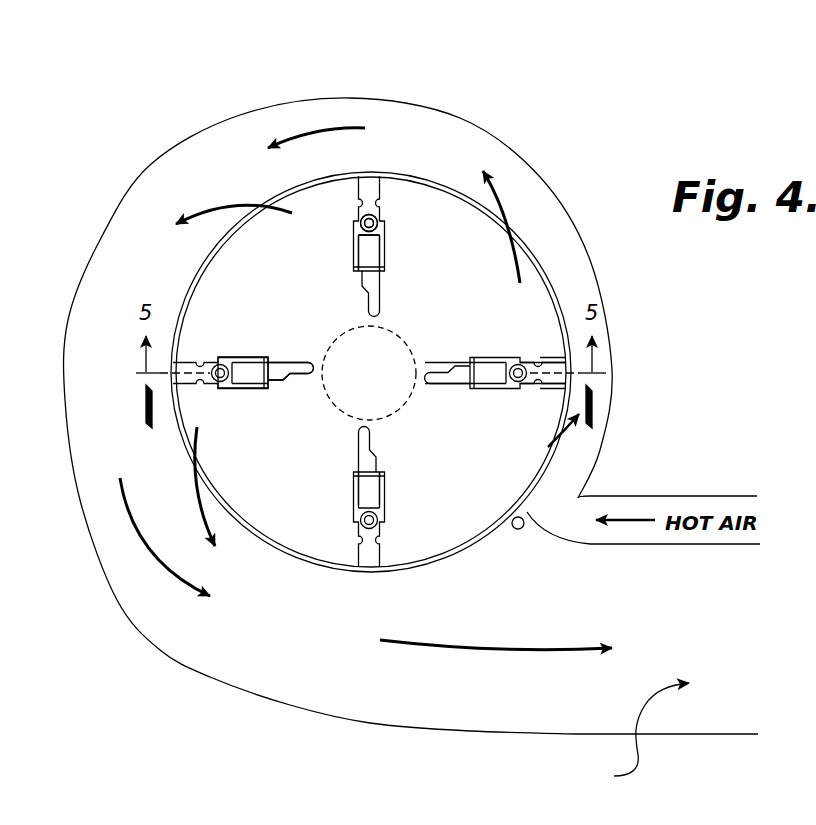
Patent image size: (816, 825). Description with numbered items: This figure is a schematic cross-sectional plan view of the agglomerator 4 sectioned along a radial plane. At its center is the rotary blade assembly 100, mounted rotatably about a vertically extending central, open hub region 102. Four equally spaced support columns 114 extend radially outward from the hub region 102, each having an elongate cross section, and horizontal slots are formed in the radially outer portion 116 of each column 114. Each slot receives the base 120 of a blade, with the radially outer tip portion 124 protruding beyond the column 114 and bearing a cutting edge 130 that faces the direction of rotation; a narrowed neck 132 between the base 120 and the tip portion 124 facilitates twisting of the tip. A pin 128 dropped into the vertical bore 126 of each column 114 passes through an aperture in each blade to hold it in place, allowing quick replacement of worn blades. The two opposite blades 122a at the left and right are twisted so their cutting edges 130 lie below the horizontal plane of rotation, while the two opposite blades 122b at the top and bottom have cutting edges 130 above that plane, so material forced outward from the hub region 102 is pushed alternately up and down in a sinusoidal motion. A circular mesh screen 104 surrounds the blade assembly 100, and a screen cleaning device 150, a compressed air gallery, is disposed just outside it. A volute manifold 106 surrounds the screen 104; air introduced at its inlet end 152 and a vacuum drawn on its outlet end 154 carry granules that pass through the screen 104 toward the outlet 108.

The agglomerator 4 is at (99, 114).
The rotary blade assembly 100 is at (414, 213).
The central open hub region 102 is at (411, 320).
The mesh screen 104 is at (187, 283).
The volute manifold 106 is at (210, 678).
The outlet 108 is at (633, 735).
The support column 114 is at (288, 381).
The radially outer portion 116 is at (234, 383).
The base 120 is at (497, 357).
The blade 122a is at (217, 361).
The blade 122b is at (356, 198).
The radially outer tip portion 124 is at (549, 361).
The vertical bore 126 is at (363, 225).
The pin 128 is at (366, 233).
The cutting edge 130 is at (562, 385).
The narrowed neck 132 is at (358, 540).
The screen cleaning device 150 is at (518, 530).
The inlet end 152 is at (592, 496).
The outlet end 154 is at (720, 736).